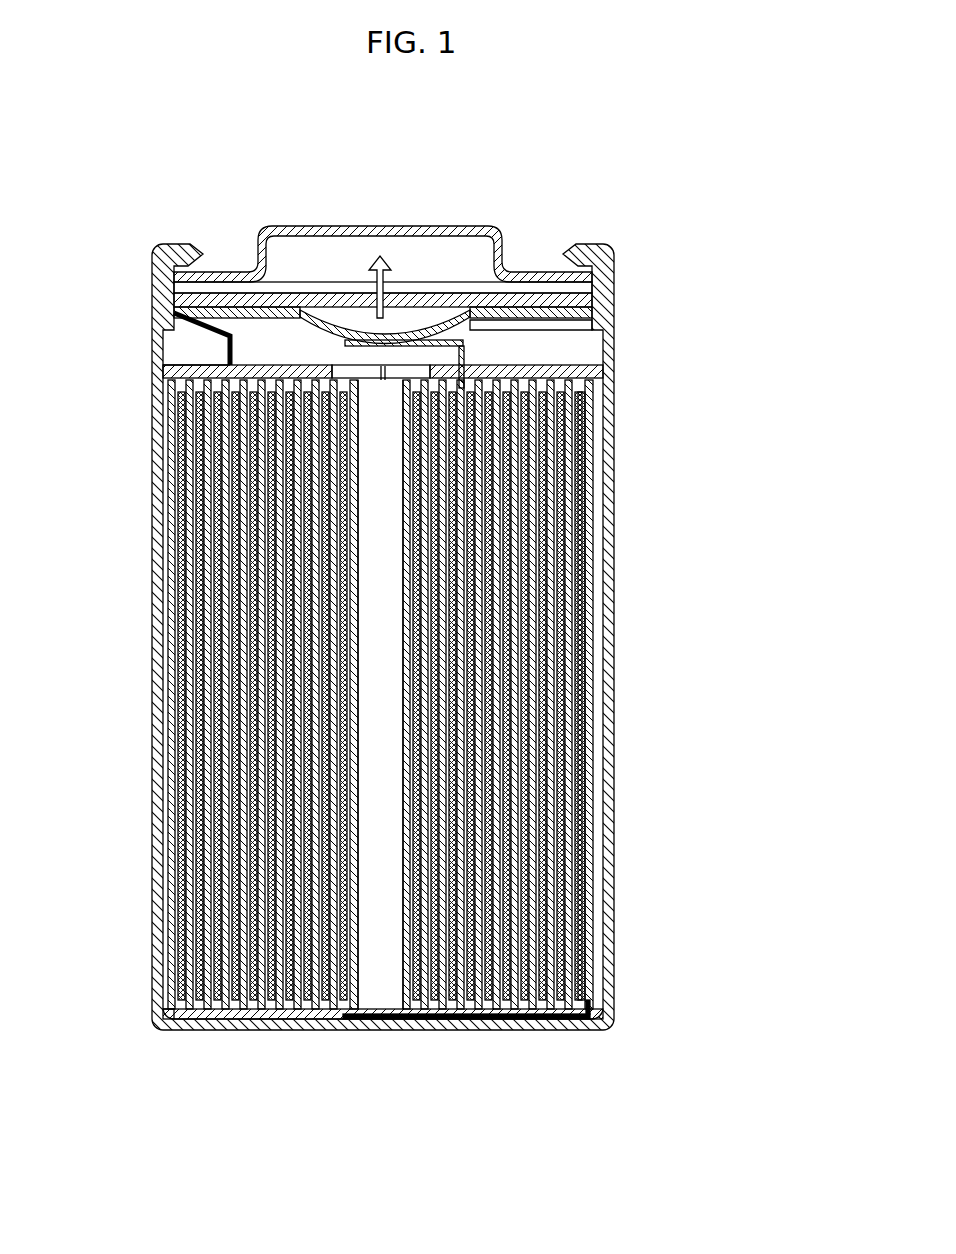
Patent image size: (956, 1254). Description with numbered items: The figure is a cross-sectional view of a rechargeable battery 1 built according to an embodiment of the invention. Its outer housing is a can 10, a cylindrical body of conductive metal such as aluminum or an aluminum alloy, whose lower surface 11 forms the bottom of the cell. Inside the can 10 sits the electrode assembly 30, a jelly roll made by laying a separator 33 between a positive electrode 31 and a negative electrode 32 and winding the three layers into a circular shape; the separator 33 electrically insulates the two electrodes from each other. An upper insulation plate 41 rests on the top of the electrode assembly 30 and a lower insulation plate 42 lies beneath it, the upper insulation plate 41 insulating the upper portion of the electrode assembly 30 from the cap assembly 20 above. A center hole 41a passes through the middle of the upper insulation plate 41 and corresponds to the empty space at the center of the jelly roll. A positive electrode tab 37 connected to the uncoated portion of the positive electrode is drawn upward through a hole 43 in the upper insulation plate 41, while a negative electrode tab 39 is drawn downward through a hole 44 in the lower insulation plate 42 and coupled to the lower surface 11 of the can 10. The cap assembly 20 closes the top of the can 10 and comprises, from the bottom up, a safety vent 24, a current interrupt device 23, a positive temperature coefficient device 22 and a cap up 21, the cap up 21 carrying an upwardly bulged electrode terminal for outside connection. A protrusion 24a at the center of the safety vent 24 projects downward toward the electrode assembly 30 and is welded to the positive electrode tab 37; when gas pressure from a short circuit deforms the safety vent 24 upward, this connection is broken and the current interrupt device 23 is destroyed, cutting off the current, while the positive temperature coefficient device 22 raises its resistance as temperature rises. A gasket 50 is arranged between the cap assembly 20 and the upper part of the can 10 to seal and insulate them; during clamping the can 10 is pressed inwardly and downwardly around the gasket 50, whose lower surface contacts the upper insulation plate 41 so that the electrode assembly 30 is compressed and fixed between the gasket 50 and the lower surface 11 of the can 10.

The secondary battery 1 is at (388, 1098).
The can 10 is at (152, 612).
The lower surface of the can 11 is at (170, 1011).
The cap assembly 20 is at (383, 237).
The cap up 21 is at (407, 226).
The positive temperature coefficient (PTC) 22 is at (528, 300).
The current interrupt device 23 is at (453, 322).
The safety vent 24 is at (298, 312).
The protrusion 24a is at (350, 328).
The electrode assembly 30 is at (463, 686).
The positive electrode 31 is at (570, 494).
The negative electrode 32 is at (592, 432).
The separator 33 is at (582, 463).
The positive electrode tab 37 is at (560, 369).
The negative electrode tab 39 is at (613, 972).
The upper insulation plate 41 is at (206, 372).
The center hole 41a is at (383, 373).
The lower insulation plate 42 is at (232, 1019).
The hole 43 is at (604, 398).
The hole 44 is at (493, 1025).
The gasket 50 is at (557, 338).